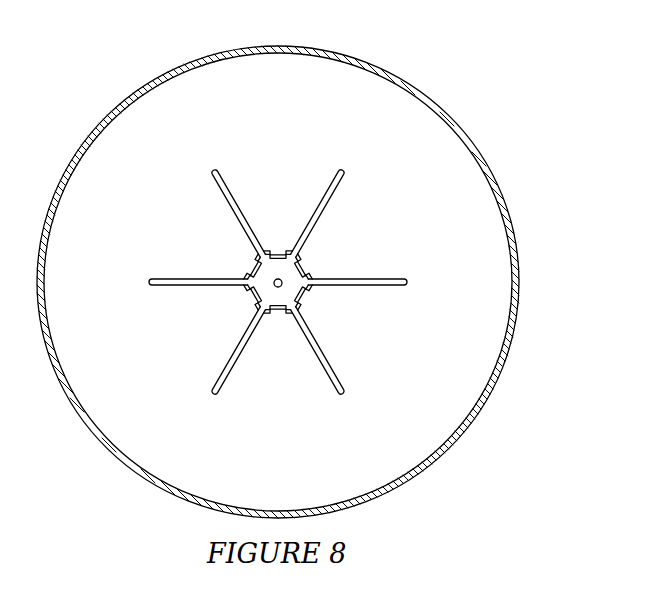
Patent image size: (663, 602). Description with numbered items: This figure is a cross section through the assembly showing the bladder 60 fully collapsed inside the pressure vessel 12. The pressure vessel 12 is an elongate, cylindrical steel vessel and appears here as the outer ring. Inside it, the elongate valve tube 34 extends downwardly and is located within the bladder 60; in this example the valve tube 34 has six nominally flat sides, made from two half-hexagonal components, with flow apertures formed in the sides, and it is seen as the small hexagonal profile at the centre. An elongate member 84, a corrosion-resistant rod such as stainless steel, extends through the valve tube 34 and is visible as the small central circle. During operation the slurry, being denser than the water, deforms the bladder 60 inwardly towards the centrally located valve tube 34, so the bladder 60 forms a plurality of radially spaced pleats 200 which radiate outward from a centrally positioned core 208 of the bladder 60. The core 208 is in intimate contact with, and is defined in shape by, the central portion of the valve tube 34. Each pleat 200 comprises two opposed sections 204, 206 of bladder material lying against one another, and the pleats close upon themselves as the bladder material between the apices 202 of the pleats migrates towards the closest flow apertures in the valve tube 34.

The pressure vessel 12 is at (492, 175).
The valve tube 34 is at (250, 266).
The bladder 60 is at (315, 262).
The elongate member 84 is at (281, 290).
The pleats 200 is at (383, 287).
The apices 202 is at (343, 172).
The opposed section 204 is at (325, 347).
The opposed section 206 is at (318, 368).
The core 208 is at (248, 298).